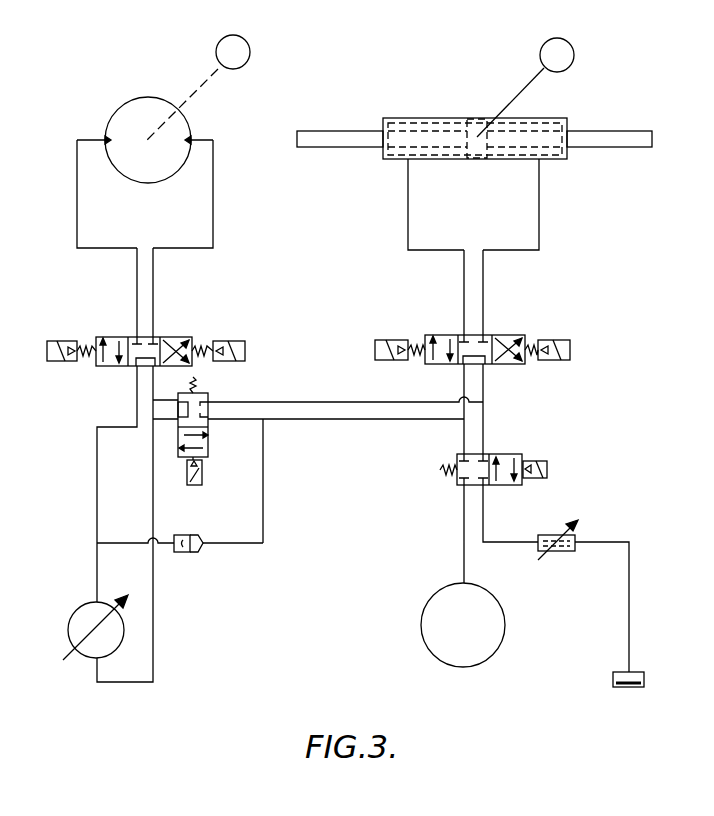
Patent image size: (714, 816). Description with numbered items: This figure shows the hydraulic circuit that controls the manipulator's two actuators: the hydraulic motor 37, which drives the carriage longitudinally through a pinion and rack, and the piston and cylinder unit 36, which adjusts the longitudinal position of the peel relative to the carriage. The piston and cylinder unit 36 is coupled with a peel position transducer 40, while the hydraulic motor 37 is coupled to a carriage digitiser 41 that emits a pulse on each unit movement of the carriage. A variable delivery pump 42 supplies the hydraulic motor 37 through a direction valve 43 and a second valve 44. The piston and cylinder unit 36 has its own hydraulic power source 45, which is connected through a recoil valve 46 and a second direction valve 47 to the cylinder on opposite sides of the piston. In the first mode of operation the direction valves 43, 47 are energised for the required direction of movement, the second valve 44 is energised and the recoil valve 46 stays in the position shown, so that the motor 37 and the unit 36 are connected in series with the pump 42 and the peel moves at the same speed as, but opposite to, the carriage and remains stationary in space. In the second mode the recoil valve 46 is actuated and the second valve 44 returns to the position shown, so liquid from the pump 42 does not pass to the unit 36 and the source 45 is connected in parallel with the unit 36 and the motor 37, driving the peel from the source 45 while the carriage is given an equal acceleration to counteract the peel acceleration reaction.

The piston and cylinder unit 36 is at (450, 118).
The hydraulic motor 37 is at (158, 97).
The peel position transducer 40 is at (543, 47).
The carriage digitiser 41 is at (221, 40).
The variable delivery pump 42 is at (68, 642).
The direction valve 43 is at (192, 337).
The second valve 44 is at (208, 443).
The hydraulic power source 45 is at (423, 613).
The recoil valve 46 is at (522, 454).
The second direction valve 47 is at (525, 335).